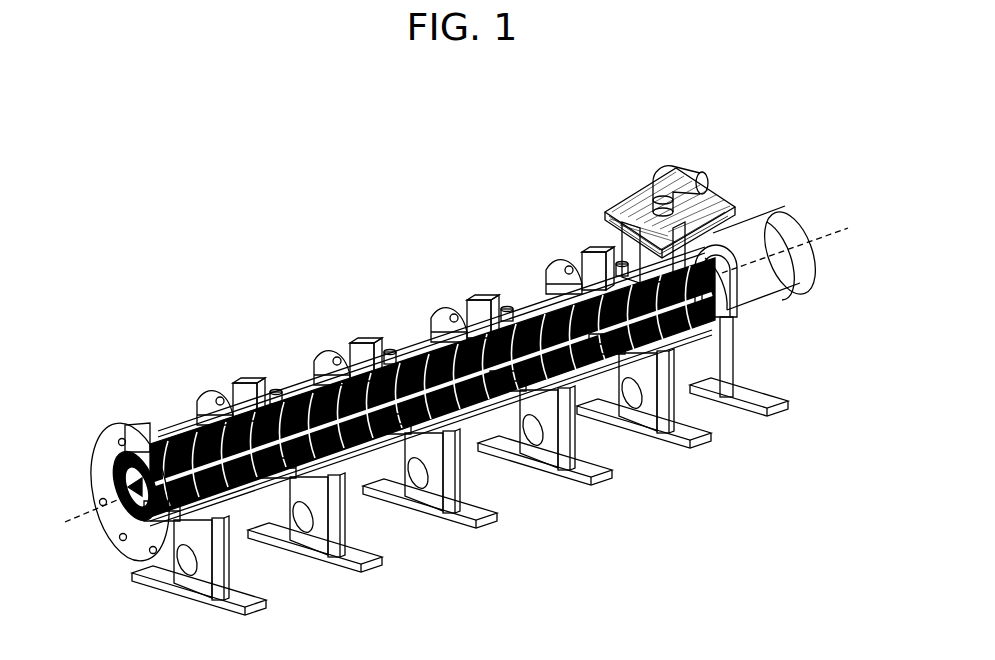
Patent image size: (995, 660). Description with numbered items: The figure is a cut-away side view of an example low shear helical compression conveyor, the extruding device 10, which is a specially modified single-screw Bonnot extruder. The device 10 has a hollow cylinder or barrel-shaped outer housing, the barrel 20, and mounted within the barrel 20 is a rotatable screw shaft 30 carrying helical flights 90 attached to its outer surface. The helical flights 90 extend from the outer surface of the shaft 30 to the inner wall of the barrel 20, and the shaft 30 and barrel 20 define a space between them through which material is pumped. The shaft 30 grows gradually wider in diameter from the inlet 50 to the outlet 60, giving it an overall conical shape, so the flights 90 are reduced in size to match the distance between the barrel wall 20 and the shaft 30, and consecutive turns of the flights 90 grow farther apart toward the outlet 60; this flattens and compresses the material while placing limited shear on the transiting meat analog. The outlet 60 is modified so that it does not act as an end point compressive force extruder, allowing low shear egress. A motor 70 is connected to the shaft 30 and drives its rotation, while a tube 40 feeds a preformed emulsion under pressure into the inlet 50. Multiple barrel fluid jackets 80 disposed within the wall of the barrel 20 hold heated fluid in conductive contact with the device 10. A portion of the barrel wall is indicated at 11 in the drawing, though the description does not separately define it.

The extruding device 10 is at (364, 318).
The screw 11 is at (443, 408).
The barrel 20 is at (413, 347).
The screw shaft 30 is at (122, 482).
The tube 40 is at (690, 176).
The inlet 50 is at (630, 247).
The outlet 60 is at (132, 522).
The motor 70 is at (753, 240).
The barrel fluid jackets 80 is at (326, 460).
The helical flights 90 is at (302, 425).